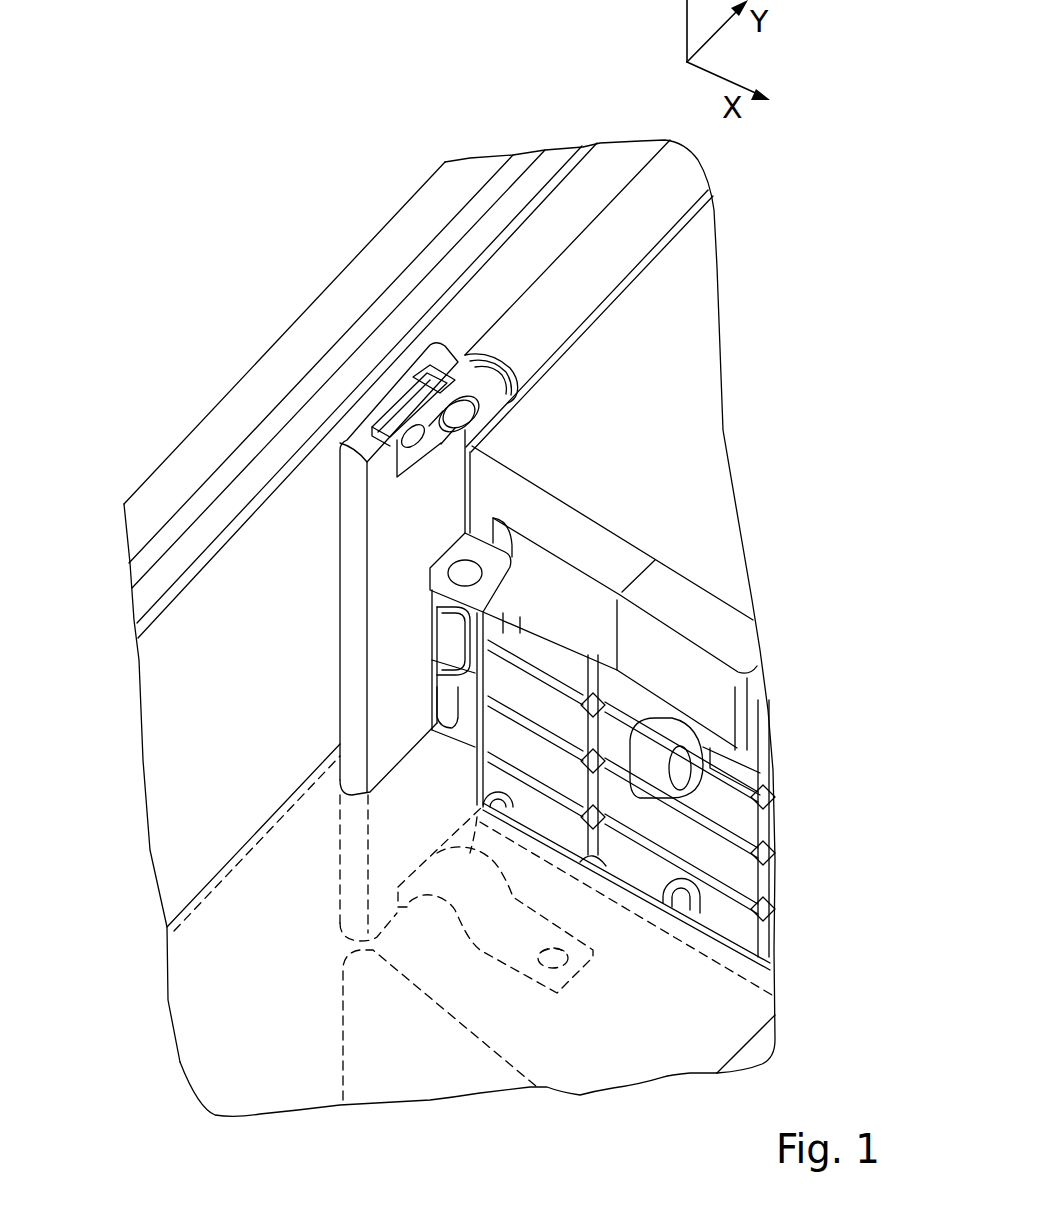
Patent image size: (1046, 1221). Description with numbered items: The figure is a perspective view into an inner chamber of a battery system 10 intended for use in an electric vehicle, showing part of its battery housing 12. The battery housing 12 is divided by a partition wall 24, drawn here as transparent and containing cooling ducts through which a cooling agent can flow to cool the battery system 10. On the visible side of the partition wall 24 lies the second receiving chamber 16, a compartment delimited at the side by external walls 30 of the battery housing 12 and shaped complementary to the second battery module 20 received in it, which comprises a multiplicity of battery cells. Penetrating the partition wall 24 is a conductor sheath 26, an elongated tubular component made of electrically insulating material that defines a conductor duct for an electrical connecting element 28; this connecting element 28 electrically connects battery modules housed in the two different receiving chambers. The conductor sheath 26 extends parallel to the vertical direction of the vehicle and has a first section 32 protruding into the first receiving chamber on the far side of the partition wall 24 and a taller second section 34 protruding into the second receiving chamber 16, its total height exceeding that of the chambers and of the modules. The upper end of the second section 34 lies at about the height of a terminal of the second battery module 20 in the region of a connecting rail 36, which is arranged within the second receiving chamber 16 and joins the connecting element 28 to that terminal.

The battery system 10 is at (203, 289).
The battery housing 12 is at (333, 210).
The second receiving chamber 16 is at (160, 700).
The second battery module 20 is at (647, 457).
The partition wall 24 is at (207, 1000).
The conductor sheath 26 is at (315, 712).
The electrical connecting element 28 is at (405, 930).
The external walls 30 is at (186, 478).
The first section 32 is at (348, 867).
The second section 34 is at (353, 567).
The connecting rail 36 is at (620, 230).